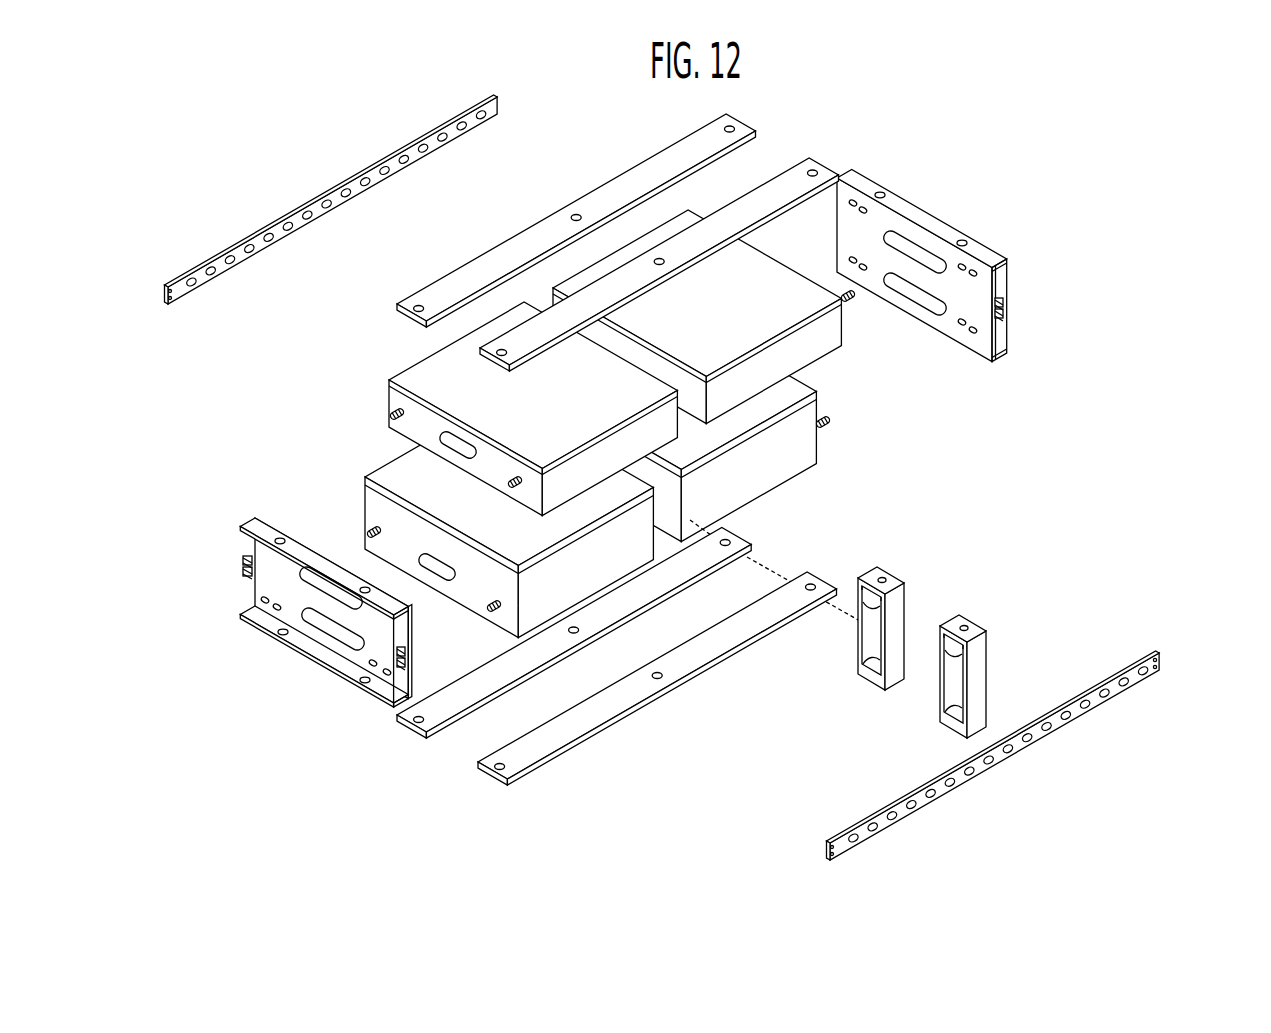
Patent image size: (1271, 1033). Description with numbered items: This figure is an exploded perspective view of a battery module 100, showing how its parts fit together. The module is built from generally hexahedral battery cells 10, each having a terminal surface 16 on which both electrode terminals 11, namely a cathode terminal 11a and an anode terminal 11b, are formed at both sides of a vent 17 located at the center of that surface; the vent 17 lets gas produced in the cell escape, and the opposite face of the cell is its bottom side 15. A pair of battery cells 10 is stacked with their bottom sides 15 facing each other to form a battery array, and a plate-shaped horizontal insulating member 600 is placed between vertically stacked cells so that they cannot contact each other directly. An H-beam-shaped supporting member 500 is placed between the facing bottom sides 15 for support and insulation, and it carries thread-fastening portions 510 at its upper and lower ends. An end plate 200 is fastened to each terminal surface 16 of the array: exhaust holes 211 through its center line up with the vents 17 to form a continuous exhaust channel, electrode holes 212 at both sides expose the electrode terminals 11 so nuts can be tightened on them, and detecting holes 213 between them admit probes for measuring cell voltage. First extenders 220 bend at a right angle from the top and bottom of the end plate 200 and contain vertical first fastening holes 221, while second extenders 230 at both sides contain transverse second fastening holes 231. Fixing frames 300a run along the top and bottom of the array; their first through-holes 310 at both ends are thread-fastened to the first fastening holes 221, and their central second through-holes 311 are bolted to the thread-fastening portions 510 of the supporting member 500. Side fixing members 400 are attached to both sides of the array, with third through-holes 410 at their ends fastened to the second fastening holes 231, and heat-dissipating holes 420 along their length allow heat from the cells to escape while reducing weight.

The battery module 100 is at (1226, 88).
The battery cell 10 is at (578, 363).
The electrode terminal 11 is at (544, 470).
The cathode terminal 11a is at (362, 512).
The anode terminal 11b is at (364, 540).
The bottom side 15 is at (695, 414).
The terminal surface 16 is at (392, 398).
The vent 17 is at (448, 444).
The end plate 200 is at (627, 427).
The exhaust hole 211 is at (905, 285).
The electrode hole 212 is at (973, 332).
The detecting hole 213 is at (957, 324).
The first extender 220 is at (1003, 256).
The first fastening hole 221 is at (961, 238).
The second extender 230 is at (1008, 333).
The second fastening hole 231 is at (1005, 315).
The fixing frame 300a is at (618, 224).
The first through-hole 310 is at (618, 224).
The second through-hole 311 is at (658, 258).
The side fixing member 400 is at (691, 477).
The third through-hole 410 is at (1157, 669).
The heat-dissipating hole 420 is at (1112, 698).
The supporting member 500 is at (922, 627).
The thread-fastening portion 510 is at (882, 571).
The horizontal insulating member 600 is at (373, 459).